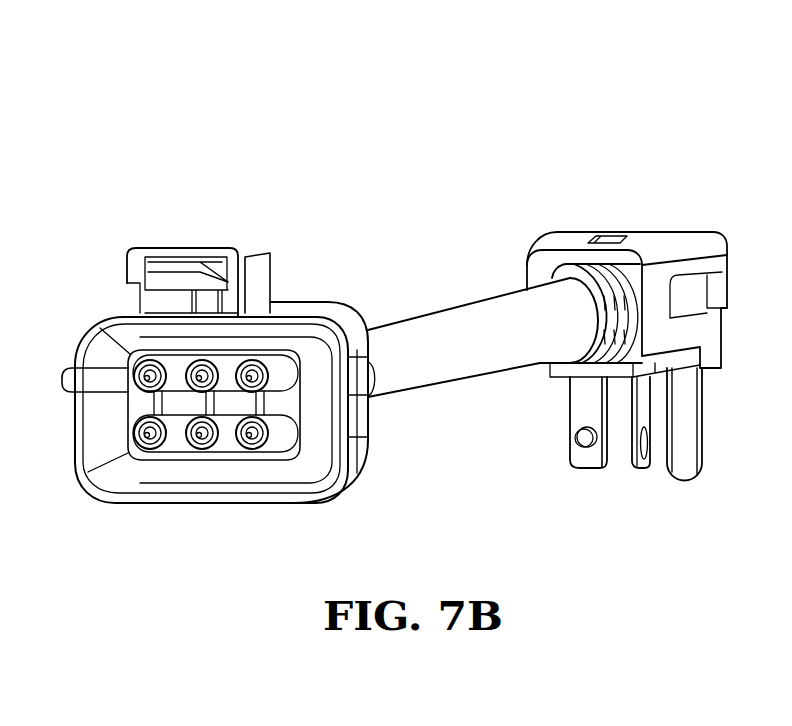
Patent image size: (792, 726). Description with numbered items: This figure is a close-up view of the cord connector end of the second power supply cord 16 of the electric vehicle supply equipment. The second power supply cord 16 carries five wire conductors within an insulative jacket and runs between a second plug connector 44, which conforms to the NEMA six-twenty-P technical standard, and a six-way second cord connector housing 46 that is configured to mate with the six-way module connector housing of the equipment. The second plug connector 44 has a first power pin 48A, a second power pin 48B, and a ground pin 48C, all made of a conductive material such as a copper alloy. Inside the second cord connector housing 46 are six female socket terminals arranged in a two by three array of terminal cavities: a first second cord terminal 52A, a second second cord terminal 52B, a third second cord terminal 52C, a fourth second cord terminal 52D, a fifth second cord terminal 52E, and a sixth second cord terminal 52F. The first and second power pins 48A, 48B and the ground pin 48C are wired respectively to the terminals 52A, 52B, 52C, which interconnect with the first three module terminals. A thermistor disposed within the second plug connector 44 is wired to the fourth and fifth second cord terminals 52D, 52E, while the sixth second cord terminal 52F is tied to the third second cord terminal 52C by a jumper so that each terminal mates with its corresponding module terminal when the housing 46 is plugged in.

The second power supply cord 16 is at (386, 169).
The second plug connector 44 is at (663, 232).
The second cord connector housing 46 is at (290, 315).
The first power pin 48A is at (690, 403).
The second power pin 48B is at (580, 452).
The ground pin 48C is at (650, 465).
The first second cord terminal 52A is at (244, 362).
The second second cord terminal 52B is at (246, 449).
The third second cord terminal 52C is at (195, 449).
The fourth second cord terminal 52D is at (137, 372).
The fifth second cord terminal 52E is at (141, 446).
The sixth second cord terminal 52F is at (196, 364).